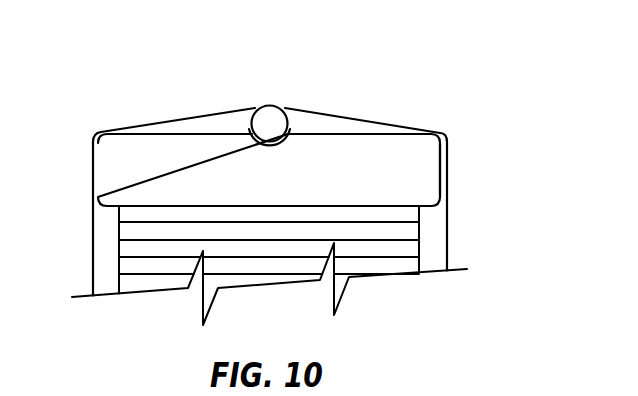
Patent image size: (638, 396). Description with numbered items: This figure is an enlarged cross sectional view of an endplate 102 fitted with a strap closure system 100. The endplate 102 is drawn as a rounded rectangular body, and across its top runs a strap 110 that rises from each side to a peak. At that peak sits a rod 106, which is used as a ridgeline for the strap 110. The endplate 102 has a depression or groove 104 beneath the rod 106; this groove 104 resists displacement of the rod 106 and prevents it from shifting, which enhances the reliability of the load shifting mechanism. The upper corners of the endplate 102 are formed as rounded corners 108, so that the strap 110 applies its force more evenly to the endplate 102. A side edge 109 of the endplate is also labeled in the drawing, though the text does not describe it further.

The strap closure system 100 is at (231, 84).
The endplate 102 is at (117, 183).
The groove 104 is at (272, 145).
The rod 106 is at (294, 107).
The rounded corners 108 is at (99, 133).
The shutter side edge 109 is at (441, 176).
The strap 110 is at (190, 115).